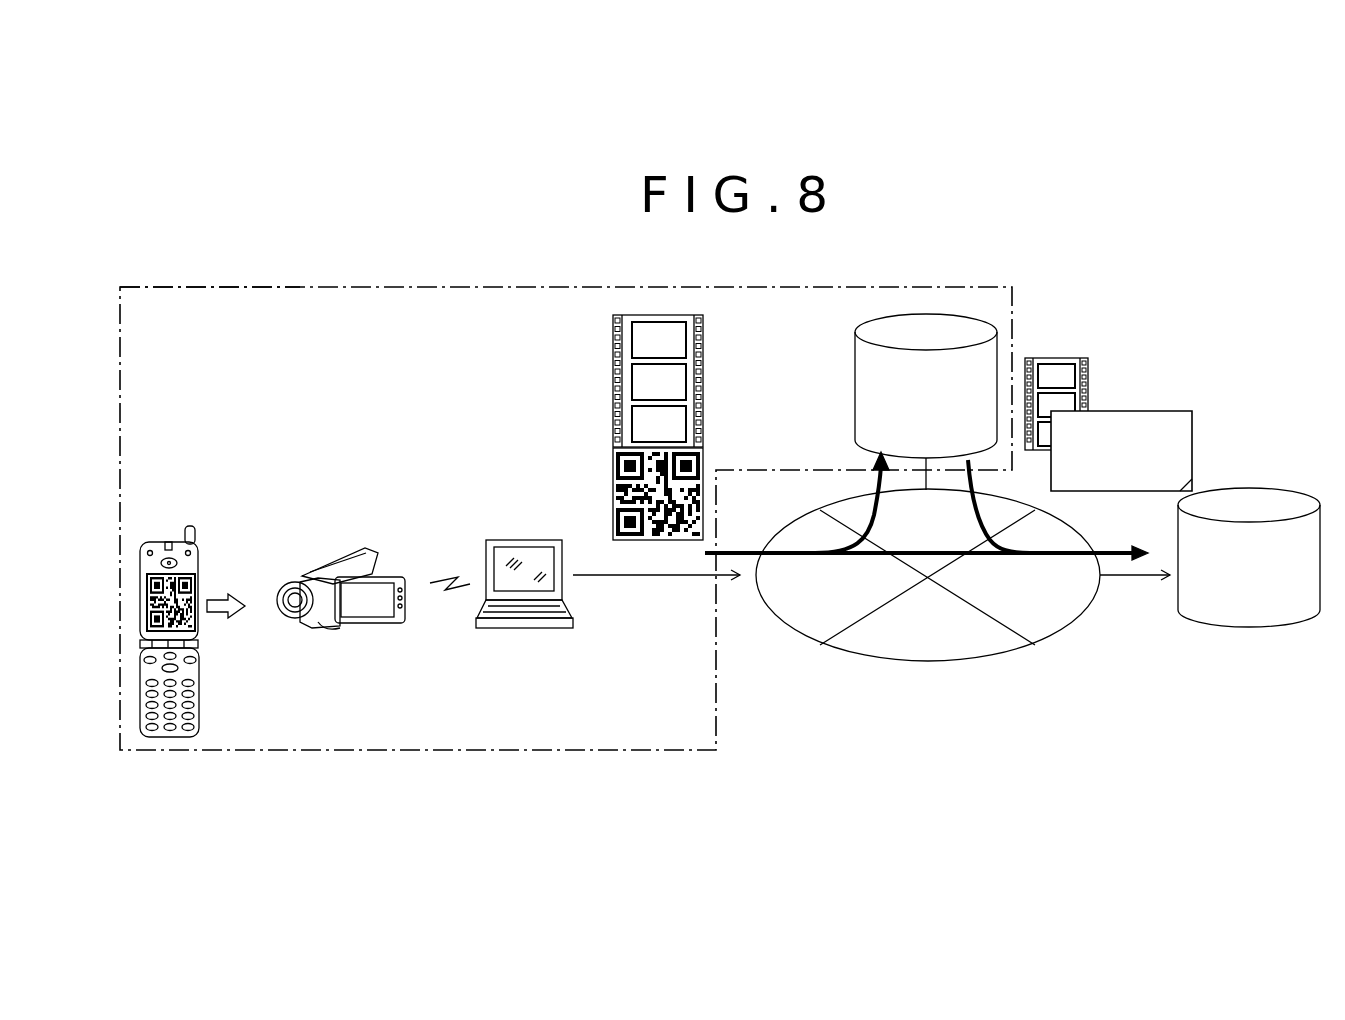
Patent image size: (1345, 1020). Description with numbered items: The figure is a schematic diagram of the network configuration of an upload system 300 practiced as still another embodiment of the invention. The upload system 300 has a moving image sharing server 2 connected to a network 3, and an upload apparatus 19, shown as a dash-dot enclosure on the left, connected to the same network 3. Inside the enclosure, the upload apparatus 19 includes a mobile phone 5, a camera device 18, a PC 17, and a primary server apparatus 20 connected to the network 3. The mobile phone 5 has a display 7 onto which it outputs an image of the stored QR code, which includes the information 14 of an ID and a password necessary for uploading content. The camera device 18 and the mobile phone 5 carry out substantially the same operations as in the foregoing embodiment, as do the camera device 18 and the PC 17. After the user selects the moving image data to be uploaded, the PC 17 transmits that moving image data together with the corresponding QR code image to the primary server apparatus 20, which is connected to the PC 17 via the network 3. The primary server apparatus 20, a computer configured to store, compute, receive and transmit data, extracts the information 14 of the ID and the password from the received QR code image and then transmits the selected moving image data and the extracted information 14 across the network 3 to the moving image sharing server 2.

The upload system 300 is at (1004, 249).
The upload apparatus 19 is at (304, 287).
The mobile phone 5 is at (170, 738).
The display 7 is at (150, 580).
The camera device 18 is at (316, 550).
The PC 17 is at (518, 540).
The primary server apparatus 20 is at (855, 400).
The network 3 is at (926, 662).
The moving image sharing server 2 is at (1250, 626).
The information of an ID and a password 14 is at (1192, 432).